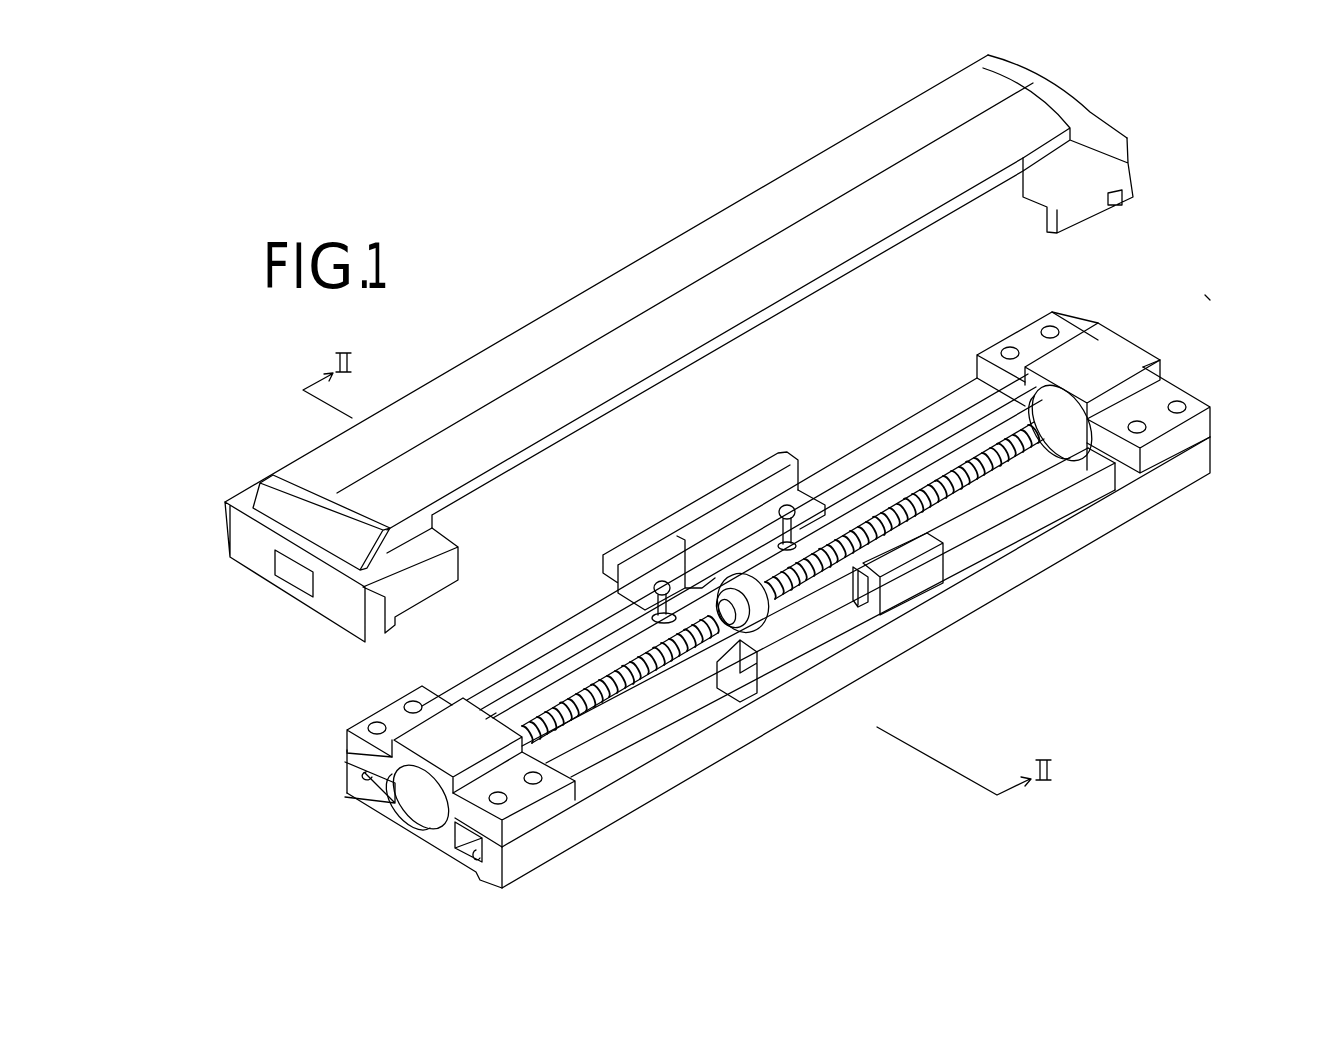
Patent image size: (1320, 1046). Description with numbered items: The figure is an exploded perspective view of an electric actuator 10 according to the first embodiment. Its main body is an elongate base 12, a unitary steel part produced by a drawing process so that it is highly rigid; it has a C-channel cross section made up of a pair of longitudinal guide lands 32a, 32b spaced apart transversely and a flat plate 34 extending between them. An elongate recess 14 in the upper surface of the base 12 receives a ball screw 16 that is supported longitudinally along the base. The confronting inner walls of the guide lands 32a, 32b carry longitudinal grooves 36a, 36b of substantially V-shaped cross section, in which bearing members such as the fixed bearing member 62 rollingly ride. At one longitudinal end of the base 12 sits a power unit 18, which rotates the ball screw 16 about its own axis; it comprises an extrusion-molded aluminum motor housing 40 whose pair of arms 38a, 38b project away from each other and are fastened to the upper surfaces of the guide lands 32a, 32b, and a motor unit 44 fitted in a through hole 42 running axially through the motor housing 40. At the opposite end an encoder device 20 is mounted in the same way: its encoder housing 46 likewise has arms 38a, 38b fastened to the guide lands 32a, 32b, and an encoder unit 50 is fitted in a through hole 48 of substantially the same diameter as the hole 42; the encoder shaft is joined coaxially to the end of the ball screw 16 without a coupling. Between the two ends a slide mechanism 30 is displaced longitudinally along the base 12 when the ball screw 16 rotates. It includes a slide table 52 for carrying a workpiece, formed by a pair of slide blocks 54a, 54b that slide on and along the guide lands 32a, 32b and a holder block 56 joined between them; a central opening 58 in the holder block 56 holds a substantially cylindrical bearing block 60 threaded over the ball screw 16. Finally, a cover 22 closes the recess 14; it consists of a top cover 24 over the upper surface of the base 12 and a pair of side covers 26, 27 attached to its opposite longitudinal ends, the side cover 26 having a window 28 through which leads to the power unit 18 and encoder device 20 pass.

The electric actuator 10 is at (1220, 293).
The base 12 is at (827, 713).
The recess 14 is at (1012, 507).
The ball screw 16 is at (925, 493).
The power unit 18 is at (460, 703).
The encoder device 20 is at (1151, 332).
The cover 22 is at (673, 228).
The top cover 24 is at (790, 190).
The side cover 26 is at (246, 556).
The side cover 27 is at (1112, 132).
The window 28 is at (296, 578).
The slide mechanism 30 is at (738, 456).
The longitudinal guide land 32a is at (580, 625).
The longitudinal guide land 32b is at (725, 710).
The flat plate 34 is at (432, 845).
The groove 36a is at (355, 772).
The groove 36b is at (482, 846).
The arm 38a is at (386, 712).
The arm 38b is at (556, 808).
The motor housing 40 is at (493, 714).
The through hole 42 is at (406, 801).
The motor unit 44 is at (418, 808).
The encoder housing 46 is at (1100, 345).
The through hole 48 is at (1088, 392).
The encoder unit 50 is at (1135, 490).
The slide table 52 is at (838, 645).
The slide block 54a is at (700, 505).
The slide block 54b is at (922, 590).
The holder block 56 is at (756, 524).
The opening 58 is at (785, 560).
The bearing block 60 is at (722, 640).
The fixed bearing member 62 is at (659, 584).